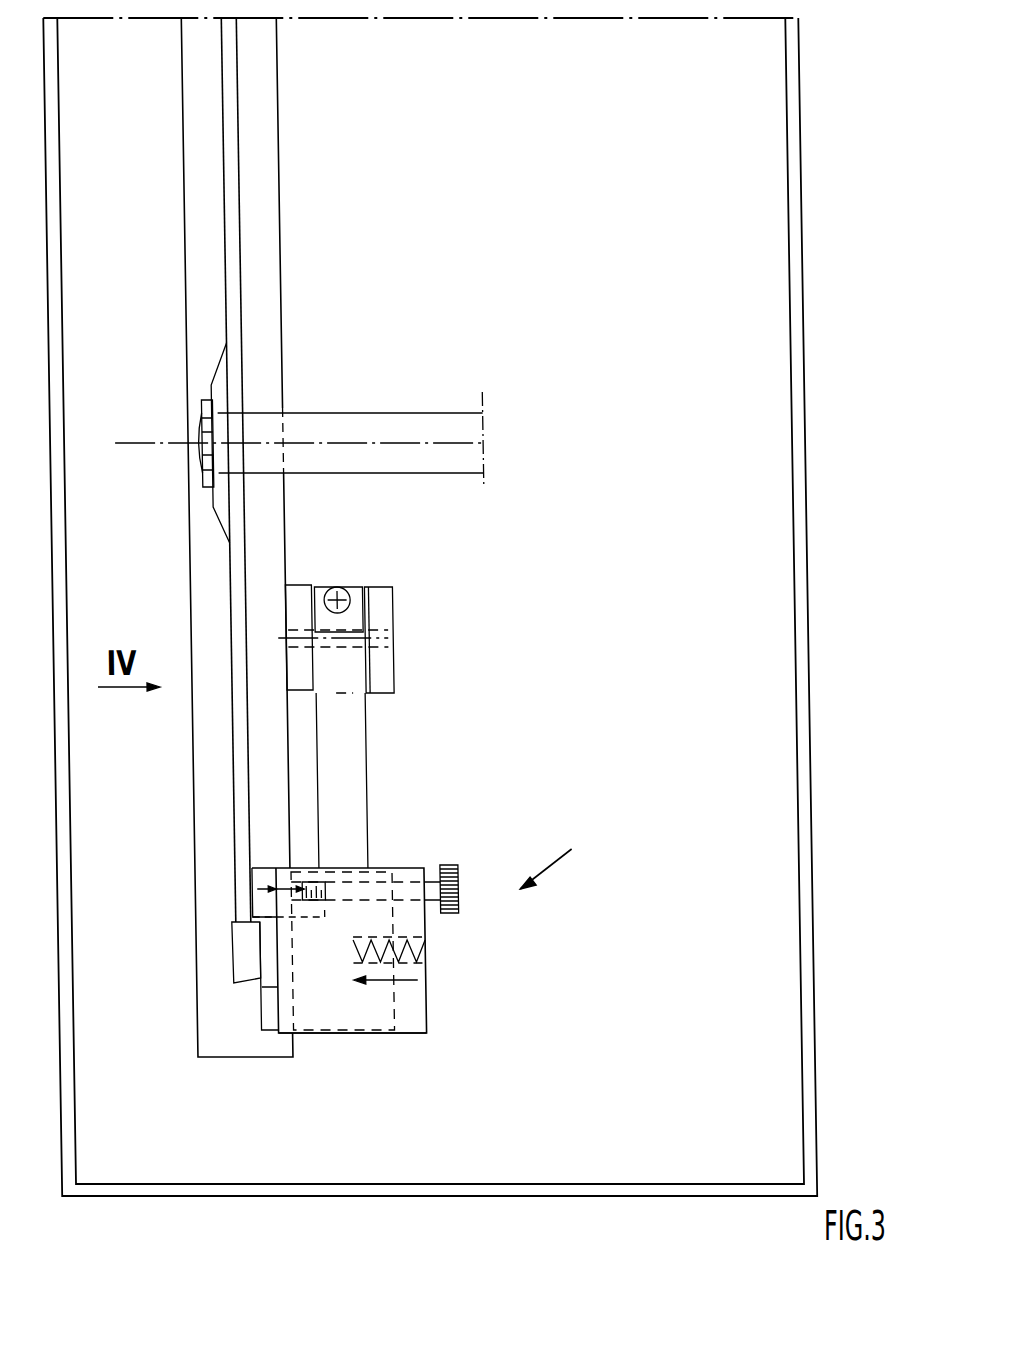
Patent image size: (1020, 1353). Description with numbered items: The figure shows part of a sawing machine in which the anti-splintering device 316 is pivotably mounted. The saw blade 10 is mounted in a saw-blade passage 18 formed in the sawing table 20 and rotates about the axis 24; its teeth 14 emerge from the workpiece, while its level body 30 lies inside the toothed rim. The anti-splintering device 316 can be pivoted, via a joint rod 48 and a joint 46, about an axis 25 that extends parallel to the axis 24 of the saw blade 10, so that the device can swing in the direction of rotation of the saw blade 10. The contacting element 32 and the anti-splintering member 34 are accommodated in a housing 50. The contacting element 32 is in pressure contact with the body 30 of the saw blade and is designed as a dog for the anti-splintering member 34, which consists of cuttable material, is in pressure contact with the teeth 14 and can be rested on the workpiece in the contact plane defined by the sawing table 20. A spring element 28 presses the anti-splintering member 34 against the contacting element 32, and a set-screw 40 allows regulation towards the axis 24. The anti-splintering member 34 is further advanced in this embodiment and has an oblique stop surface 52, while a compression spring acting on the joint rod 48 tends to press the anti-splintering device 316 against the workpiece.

The saw blade 10 is at (240, 106).
The teeth of the saw blade 14 is at (217, 931).
The saw-blade passage 18 is at (274, 179).
The sawing table 20 is at (782, 169).
The axis of the saw blade 24 is at (471, 436).
The pivot axis 25 is at (378, 628).
The spring element 28 is at (410, 930).
The body of the saw blade 30 is at (229, 57).
The contacting element 32 is at (260, 827).
The anti-splintering member 34 is at (311, 1001).
The set-screw 40 is at (466, 830).
The joint 46 is at (396, 566).
The joint rod 48 is at (340, 740).
The housing 50 is at (409, 1001).
The oblique stop surface 52 is at (249, 996).
The anti-splintering device 316 is at (568, 862).